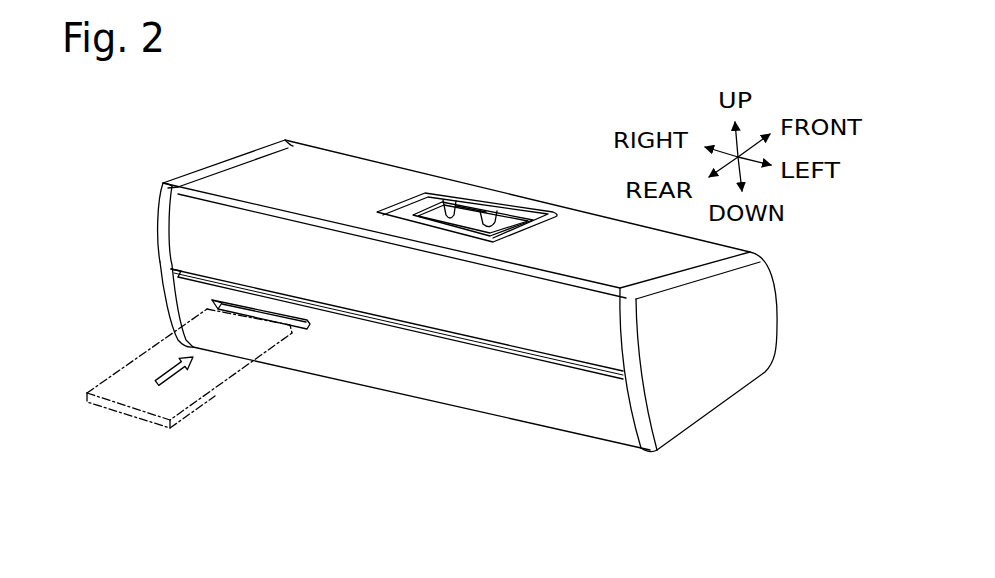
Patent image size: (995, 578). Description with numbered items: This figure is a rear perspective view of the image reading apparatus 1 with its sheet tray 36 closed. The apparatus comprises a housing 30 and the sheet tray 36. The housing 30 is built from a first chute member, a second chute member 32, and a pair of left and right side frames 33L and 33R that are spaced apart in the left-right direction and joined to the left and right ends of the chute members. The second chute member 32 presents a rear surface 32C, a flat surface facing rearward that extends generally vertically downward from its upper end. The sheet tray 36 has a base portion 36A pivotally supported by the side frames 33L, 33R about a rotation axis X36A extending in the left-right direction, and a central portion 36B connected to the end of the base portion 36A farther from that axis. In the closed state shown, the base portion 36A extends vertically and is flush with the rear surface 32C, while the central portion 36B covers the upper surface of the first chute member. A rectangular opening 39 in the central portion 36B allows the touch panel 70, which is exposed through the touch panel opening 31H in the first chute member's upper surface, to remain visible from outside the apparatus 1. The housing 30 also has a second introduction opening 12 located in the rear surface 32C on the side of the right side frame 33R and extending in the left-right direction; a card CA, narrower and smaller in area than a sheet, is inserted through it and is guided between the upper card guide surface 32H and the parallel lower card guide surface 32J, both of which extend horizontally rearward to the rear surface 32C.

The image reading apparatus 1 is at (354, 144).
The housing 30 is at (704, 444).
The sheet tray 36 is at (271, 167).
The base portion 36A is at (183, 220).
The central portion 36B is at (247, 176).
The rotation axis X36A is at (160, 266).
The touch panel opening 31H is at (490, 227).
The opening 39 is at (433, 215).
The touch panel 70 is at (458, 222).
The right side frame 33R is at (156, 287).
The left side frame 33L is at (734, 367).
The second chute member 32 is at (544, 409).
The rear surface 32C is at (442, 385).
The upper card guide surface 32H is at (260, 312).
The lower card guide surface 32J is at (268, 324).
The second introduction opening 12 is at (301, 340).
The card CA is at (137, 395).